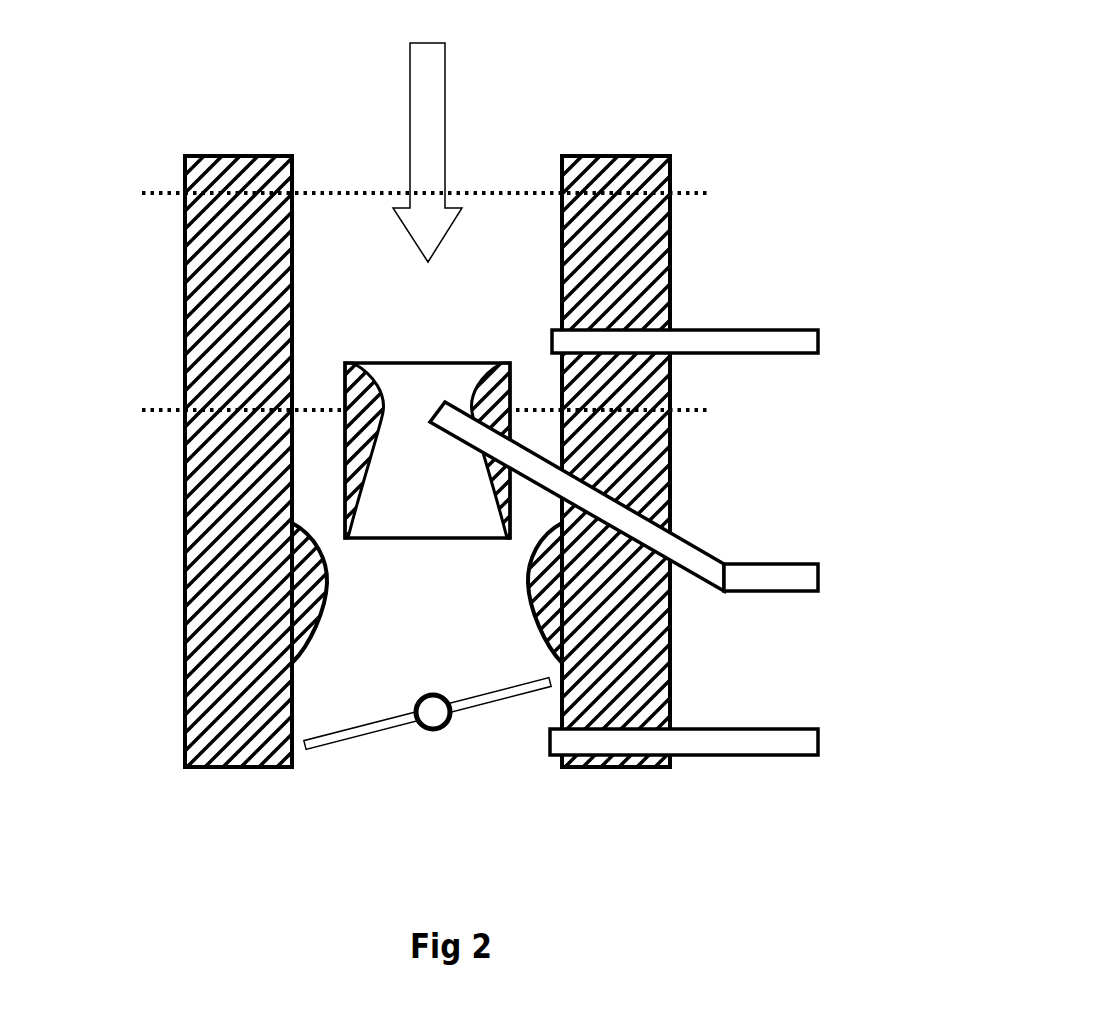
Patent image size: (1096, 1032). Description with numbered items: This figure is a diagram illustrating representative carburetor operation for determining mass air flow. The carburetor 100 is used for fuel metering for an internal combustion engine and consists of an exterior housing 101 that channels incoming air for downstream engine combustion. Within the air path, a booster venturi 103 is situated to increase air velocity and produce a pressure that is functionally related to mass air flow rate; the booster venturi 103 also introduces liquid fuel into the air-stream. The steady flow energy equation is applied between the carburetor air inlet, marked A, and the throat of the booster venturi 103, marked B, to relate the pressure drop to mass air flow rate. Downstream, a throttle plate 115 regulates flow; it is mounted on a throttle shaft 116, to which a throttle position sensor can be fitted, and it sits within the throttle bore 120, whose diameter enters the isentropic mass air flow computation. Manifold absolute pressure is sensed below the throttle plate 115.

The carburetor 100 is at (661, 85).
The exterior housing 101 is at (185, 307).
The booster venturi 103 is at (370, 363).
The throttle plate 115 is at (372, 732).
The throttle shaft 116 is at (427, 693).
The throttle bore 120 is at (302, 765).